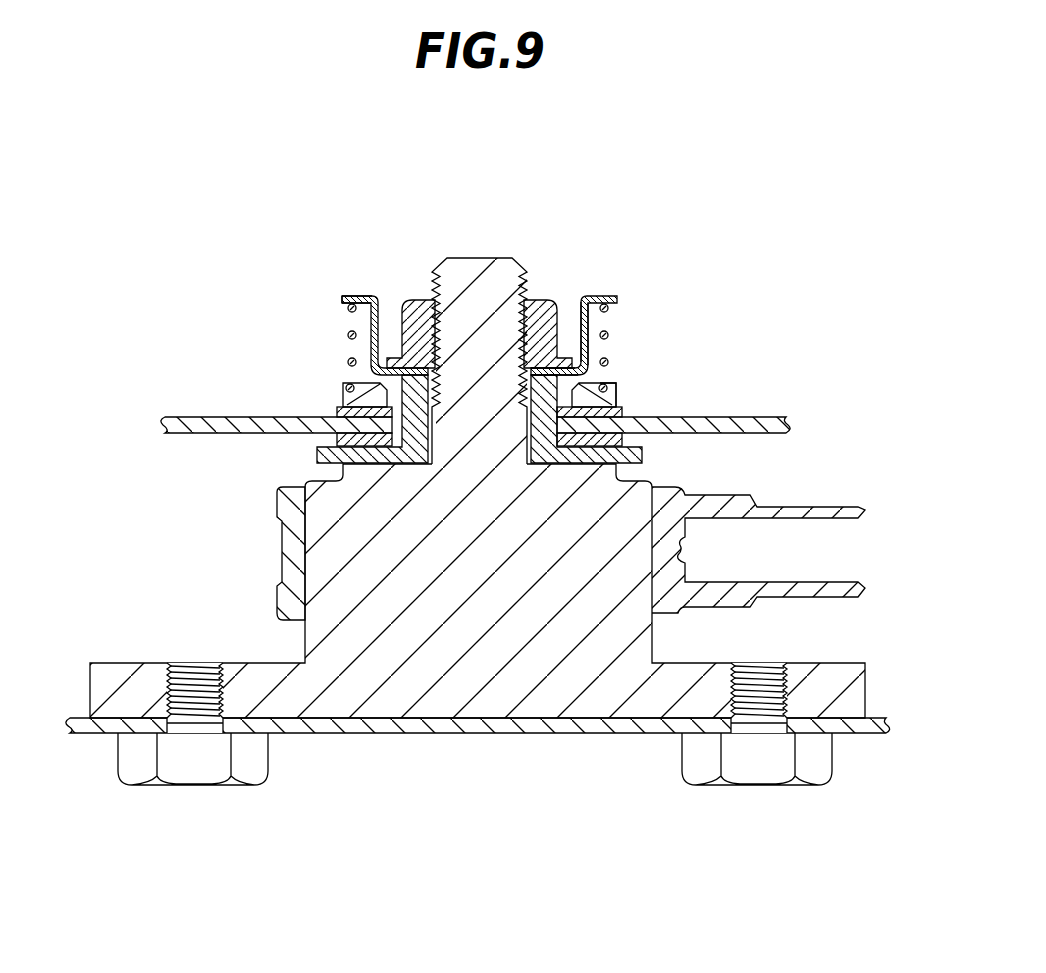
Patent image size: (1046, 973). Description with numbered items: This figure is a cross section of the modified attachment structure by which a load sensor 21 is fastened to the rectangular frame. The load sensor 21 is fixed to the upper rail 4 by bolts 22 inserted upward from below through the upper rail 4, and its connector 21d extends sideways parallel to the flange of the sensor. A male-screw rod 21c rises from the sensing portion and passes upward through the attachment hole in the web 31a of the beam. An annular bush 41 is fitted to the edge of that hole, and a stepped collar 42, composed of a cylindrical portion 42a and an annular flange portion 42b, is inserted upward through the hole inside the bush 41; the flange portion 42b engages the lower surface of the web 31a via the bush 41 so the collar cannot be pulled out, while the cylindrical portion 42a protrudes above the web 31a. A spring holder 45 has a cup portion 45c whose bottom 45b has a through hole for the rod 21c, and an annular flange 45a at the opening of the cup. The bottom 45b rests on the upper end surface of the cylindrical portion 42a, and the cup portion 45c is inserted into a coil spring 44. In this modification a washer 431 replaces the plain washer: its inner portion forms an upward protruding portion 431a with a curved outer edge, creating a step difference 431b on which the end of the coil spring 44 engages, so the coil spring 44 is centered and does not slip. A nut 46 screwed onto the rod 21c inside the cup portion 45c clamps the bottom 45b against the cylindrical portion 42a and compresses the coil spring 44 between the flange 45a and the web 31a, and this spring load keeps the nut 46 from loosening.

The load sensor 21 is at (497, 680).
The rod 21c is at (492, 300).
The connector 21d is at (793, 510).
The bolt 22 is at (199, 760).
The upper rail 4 is at (338, 727).
The web 31a is at (238, 428).
The bush 41 is at (345, 412).
The stepped collar 42 is at (686, 404).
The cylindrical portion 42a is at (622, 410).
The flange portion 42b is at (640, 444).
The washer 431 is at (618, 408).
The protruding portion 431a is at (603, 393).
The step difference 431b is at (613, 400).
The coil spring 44 is at (345, 335).
The spring holder 45 is at (504, 297).
The flange 45a is at (359, 296).
The bottom 45b is at (586, 350).
The cup portion 45c is at (579, 322).
The nut 46 is at (412, 320).